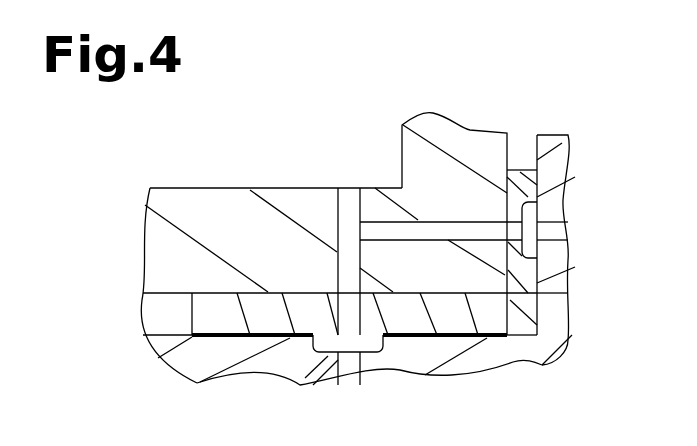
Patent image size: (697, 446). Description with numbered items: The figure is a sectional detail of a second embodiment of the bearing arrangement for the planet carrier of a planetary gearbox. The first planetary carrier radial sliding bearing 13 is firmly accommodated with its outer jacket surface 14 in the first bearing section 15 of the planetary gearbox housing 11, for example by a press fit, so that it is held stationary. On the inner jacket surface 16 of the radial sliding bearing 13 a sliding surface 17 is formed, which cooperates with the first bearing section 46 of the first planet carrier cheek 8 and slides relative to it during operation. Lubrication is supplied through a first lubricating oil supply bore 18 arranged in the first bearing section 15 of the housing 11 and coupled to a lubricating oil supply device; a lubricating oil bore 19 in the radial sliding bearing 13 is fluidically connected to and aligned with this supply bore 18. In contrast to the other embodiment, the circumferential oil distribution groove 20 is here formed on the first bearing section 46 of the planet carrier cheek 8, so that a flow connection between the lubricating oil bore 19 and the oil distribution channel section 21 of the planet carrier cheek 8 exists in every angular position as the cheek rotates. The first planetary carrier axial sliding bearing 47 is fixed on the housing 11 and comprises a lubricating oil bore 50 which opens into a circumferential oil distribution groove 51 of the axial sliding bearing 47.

The first planet carrier cheek 8 is at (510, 352).
The planetary gearbox housing 11 is at (460, 130).
The first planetary carrier radial sliding bearing 13 is at (296, 294).
The outer jacket surface 14 is at (453, 292).
The first bearing section 15 is at (187, 319).
The inner jacket surface 16 is at (260, 340).
The sliding surface 17 is at (408, 337).
The first lubricating oil supply bore 18 is at (396, 230).
The lubricating oil bore 19 is at (352, 302).
The circumferential oil distribution groove 20 is at (368, 345).
The oil distribution channel section 21 is at (342, 357).
The first bearing section 46 is at (473, 333).
The first planetary carrier axial sliding bearing 47 is at (510, 232).
The lubricating oil bore 50 is at (527, 213).
The circumferential oil distribution groove 51 is at (540, 251).